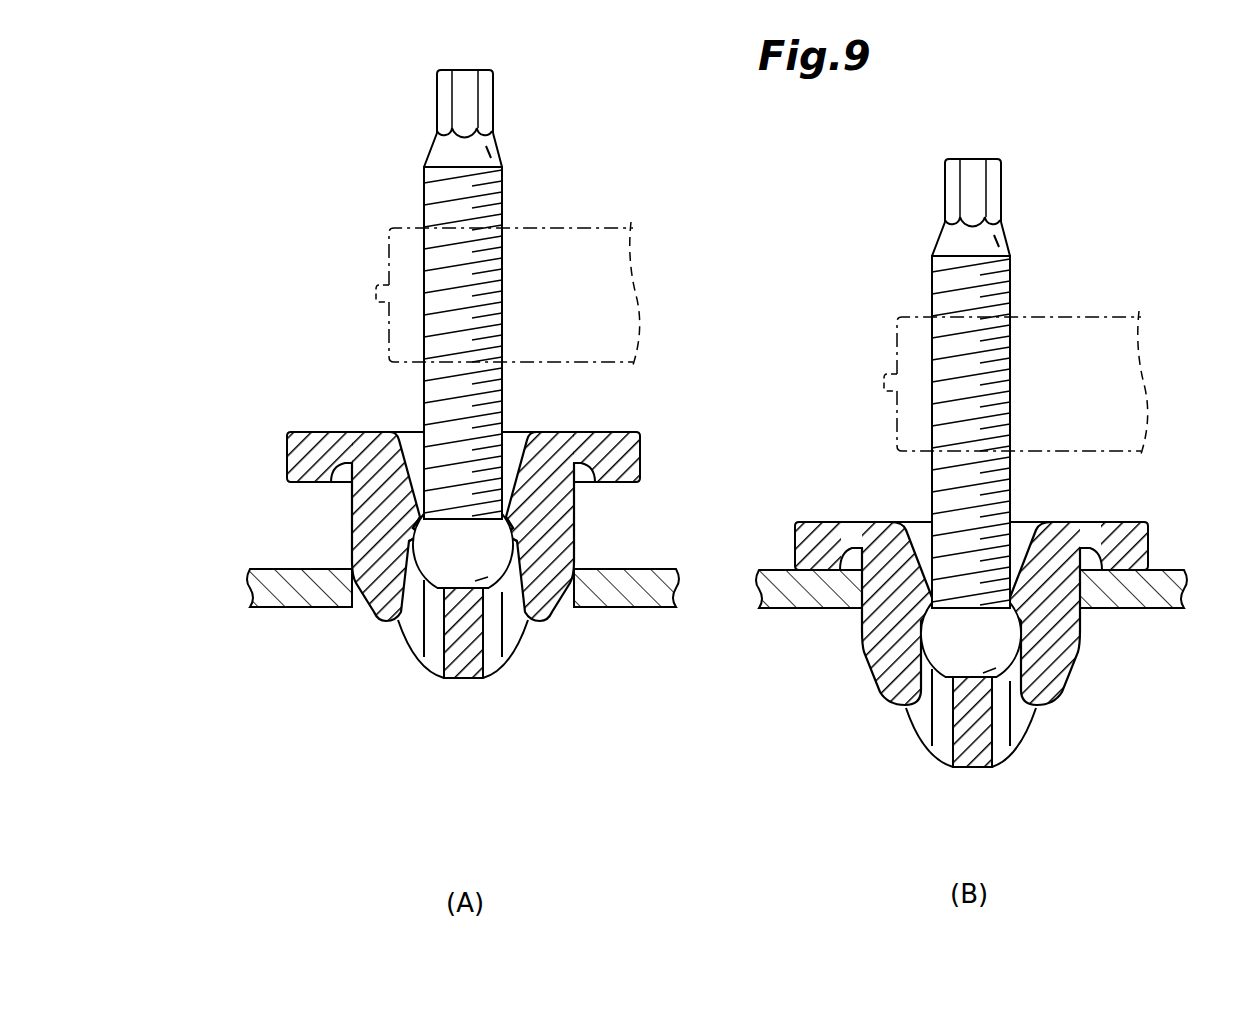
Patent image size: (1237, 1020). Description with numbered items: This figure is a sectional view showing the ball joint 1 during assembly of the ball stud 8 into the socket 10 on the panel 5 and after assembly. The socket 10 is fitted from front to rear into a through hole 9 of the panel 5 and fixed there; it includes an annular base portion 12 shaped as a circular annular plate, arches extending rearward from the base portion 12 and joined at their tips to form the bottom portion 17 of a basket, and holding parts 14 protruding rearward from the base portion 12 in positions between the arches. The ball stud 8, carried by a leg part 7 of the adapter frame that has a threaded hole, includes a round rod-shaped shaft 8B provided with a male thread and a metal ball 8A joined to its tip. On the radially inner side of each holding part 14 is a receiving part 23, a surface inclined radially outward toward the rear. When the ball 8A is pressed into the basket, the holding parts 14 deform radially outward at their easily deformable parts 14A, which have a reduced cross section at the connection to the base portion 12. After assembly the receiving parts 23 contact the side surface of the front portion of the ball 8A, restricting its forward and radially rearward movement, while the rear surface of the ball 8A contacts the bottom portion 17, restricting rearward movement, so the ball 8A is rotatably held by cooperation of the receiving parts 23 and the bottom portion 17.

The ball joint 1 is at (547, 197).
The panel 5 is at (277, 594).
The leg part 7 is at (645, 311).
The ball stud 8 is at (703, 339).
The ball 8A is at (490, 560).
The shaft 8B is at (424, 194).
The through hole 9 is at (578, 567).
The socket 10 is at (287, 447).
The base portion 12 is at (641, 433).
The holding part 14 is at (702, 574).
The easily deformable part 14A is at (337, 432).
The bottom portion 17 is at (457, 680).
The receiving part 23 is at (412, 531).